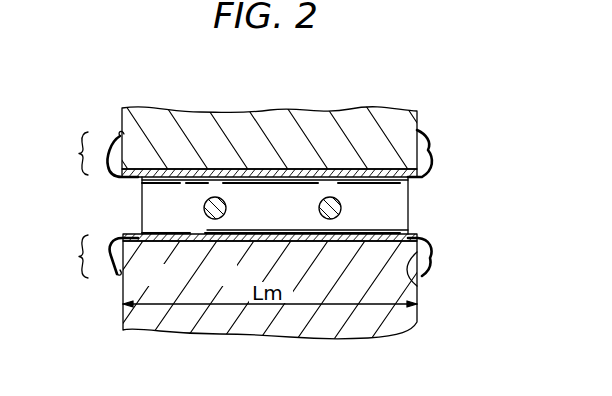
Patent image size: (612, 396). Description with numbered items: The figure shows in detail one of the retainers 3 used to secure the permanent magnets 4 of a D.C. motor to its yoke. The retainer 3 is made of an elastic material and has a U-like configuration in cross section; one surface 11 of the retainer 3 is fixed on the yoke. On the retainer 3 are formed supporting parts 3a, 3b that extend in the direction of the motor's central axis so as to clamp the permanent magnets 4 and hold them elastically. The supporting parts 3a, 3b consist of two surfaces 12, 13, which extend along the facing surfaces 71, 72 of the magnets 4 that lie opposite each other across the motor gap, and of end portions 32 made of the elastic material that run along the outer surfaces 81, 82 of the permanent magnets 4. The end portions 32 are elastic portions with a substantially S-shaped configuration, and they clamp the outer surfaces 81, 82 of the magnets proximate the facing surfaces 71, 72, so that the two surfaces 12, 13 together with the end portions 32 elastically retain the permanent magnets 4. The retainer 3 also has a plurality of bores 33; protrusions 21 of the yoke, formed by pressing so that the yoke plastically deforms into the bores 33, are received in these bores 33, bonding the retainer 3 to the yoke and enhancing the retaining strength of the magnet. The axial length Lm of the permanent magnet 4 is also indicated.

The retainer 3 is at (263, 170).
The supporting part 3a is at (62, 256).
The supporting part 3b is at (62, 153).
The permanent magnet 4 is at (368, 140).
The surface of retainer 11 is at (387, 192).
The surface of supporting part 12 is at (192, 233).
The surface of supporting part 13 is at (175, 183).
The protrusion 21 is at (216, 197).
The end portion 32 is at (116, 143).
The bore 33 is at (226, 213).
The facing surface of magnet 71 is at (183, 176).
The facing surface of magnet 72 is at (218, 241).
The outer surface of magnet 81 is at (126, 152).
The outer surface of magnet 82 is at (123, 250).